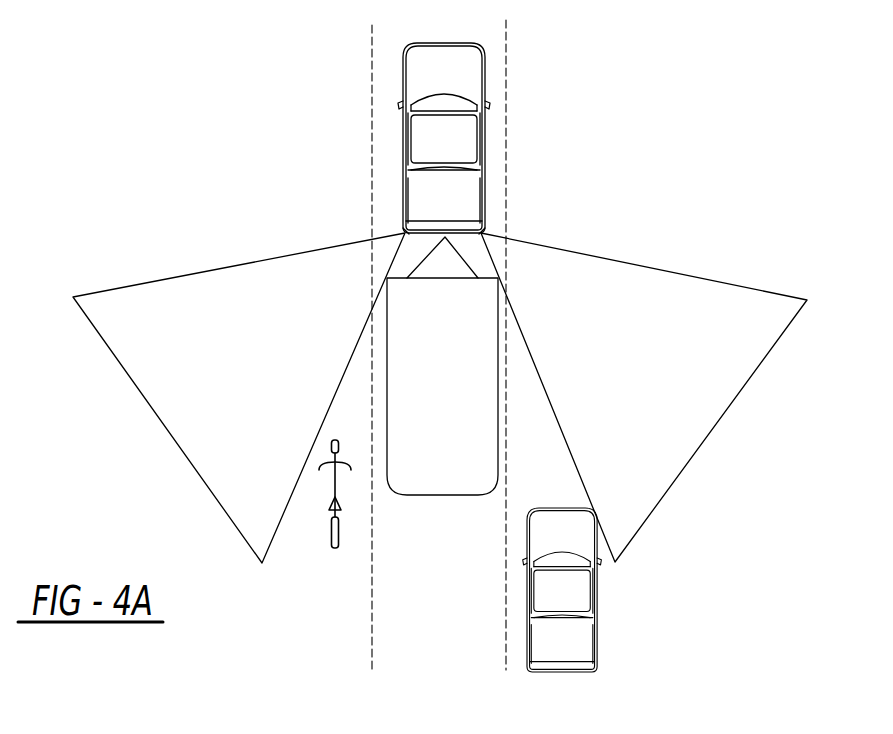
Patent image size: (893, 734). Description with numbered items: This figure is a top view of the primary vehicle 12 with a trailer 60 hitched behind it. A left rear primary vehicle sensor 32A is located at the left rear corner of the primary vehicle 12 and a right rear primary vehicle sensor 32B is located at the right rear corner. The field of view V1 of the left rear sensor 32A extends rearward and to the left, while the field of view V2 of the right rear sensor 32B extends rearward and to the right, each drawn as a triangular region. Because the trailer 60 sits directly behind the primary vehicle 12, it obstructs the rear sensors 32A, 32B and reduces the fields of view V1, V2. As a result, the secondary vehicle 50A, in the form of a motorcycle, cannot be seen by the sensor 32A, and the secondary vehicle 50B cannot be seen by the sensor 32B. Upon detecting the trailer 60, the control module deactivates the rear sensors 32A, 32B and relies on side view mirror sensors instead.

The primary vehicle 12 is at (453, 73).
The left rear primary vehicle sensor 32A is at (408, 230).
The right rear primary vehicle sensor 32B is at (482, 232).
The field of view of the left rear sensor V1 is at (113, 355).
The field of view of the right rear sensor V2 is at (777, 342).
The trailer 60 is at (442, 478).
The secondary vehicle 50A is at (330, 505).
The secondary vehicle 50B is at (592, 635).